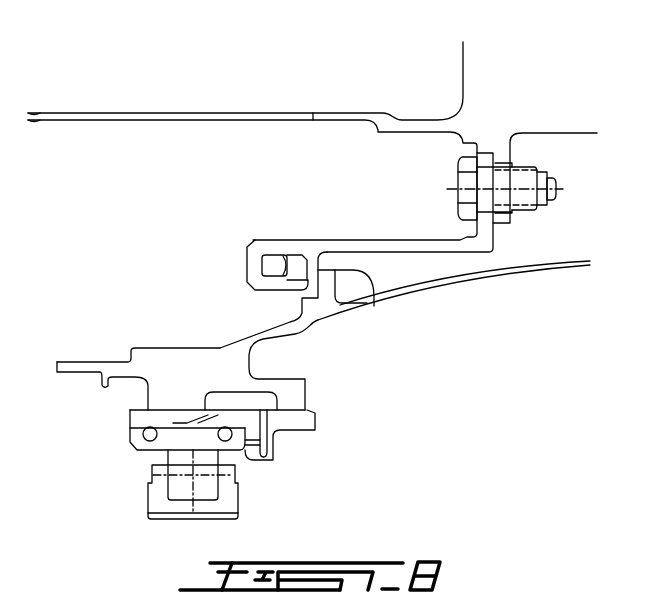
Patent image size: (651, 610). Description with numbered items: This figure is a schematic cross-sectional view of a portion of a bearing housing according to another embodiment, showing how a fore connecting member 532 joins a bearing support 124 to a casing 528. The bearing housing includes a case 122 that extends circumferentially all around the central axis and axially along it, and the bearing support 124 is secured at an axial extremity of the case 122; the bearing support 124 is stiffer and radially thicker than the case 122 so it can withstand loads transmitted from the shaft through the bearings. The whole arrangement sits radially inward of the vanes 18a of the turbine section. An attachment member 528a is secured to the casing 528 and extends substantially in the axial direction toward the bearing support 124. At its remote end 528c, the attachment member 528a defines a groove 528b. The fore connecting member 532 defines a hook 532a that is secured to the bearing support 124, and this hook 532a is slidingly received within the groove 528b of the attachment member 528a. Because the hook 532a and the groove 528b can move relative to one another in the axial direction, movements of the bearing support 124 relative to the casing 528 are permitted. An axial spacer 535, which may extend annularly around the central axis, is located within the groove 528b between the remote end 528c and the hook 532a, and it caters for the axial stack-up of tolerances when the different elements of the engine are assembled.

The vanes 18a is at (463, 70).
The casing 528 is at (82, 112).
The attachment member 528a is at (402, 236).
The groove 528b is at (275, 263).
The axial spacer 535 is at (275, 263).
The remote end 528c is at (255, 263).
The fore connecting member 532 is at (352, 221).
The hook 532a is at (374, 300).
The case 122 is at (460, 283).
The bearing support 124 is at (172, 347).